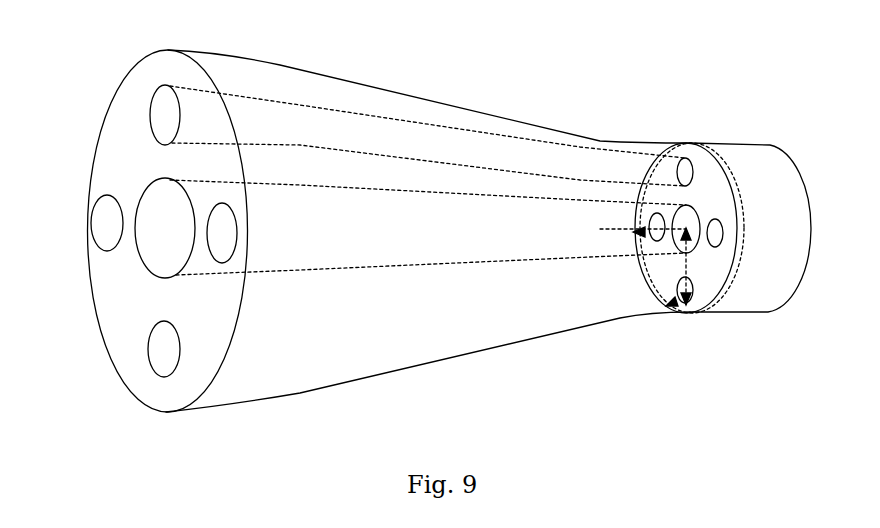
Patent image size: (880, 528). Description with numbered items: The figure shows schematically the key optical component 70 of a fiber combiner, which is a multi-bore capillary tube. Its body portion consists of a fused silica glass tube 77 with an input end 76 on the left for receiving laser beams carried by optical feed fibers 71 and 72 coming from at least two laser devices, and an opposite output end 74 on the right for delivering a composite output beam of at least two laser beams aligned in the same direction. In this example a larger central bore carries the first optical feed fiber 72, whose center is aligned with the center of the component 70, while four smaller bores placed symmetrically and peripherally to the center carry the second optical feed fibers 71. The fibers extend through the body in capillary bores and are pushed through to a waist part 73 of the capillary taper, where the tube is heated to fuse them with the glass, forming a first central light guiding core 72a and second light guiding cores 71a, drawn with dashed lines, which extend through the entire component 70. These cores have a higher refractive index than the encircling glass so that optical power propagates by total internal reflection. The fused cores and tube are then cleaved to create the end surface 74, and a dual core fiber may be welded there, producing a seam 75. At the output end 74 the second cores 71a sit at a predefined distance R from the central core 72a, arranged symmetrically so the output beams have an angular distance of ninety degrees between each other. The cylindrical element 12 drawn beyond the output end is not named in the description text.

The cylinder body 12 is at (780, 183).
The optical component 70 is at (133, 57).
The second optical feed fibers 71 is at (105, 218).
The second light guiding cores 71a is at (370, 123).
The first optical feed fiber 72 is at (176, 241).
The first central light guiding core 72a is at (525, 258).
The waist part 73 is at (575, 140).
The output end 74 is at (707, 200).
The seam 75 is at (738, 207).
The input end 76 is at (127, 313).
The fused silica glass tube 77 is at (413, 300).